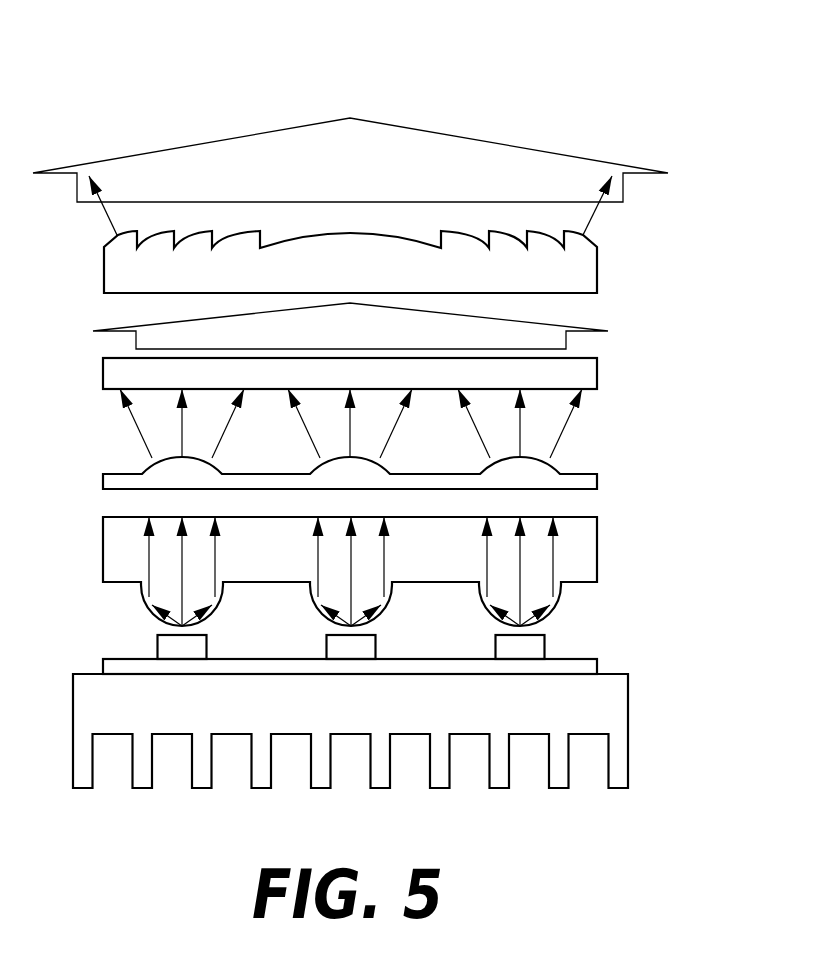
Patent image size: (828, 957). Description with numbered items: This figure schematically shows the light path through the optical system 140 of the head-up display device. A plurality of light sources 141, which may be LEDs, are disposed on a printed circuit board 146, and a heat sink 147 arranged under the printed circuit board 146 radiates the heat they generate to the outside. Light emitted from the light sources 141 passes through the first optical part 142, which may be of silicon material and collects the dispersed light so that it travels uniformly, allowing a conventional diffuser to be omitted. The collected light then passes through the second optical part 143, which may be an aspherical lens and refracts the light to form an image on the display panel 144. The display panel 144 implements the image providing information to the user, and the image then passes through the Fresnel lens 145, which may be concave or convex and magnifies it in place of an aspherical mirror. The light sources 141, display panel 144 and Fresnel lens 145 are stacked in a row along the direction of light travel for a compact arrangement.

The optical system 140 is at (112, 48).
The light sources 141 is at (545, 642).
The first optical part 142 is at (597, 550).
The second optical part 143 is at (597, 480).
The display panel 144 is at (597, 373).
The Fresnel lens 145 is at (597, 270).
The printed circuit board 146 is at (597, 667).
The heat sink 147 is at (628, 706).